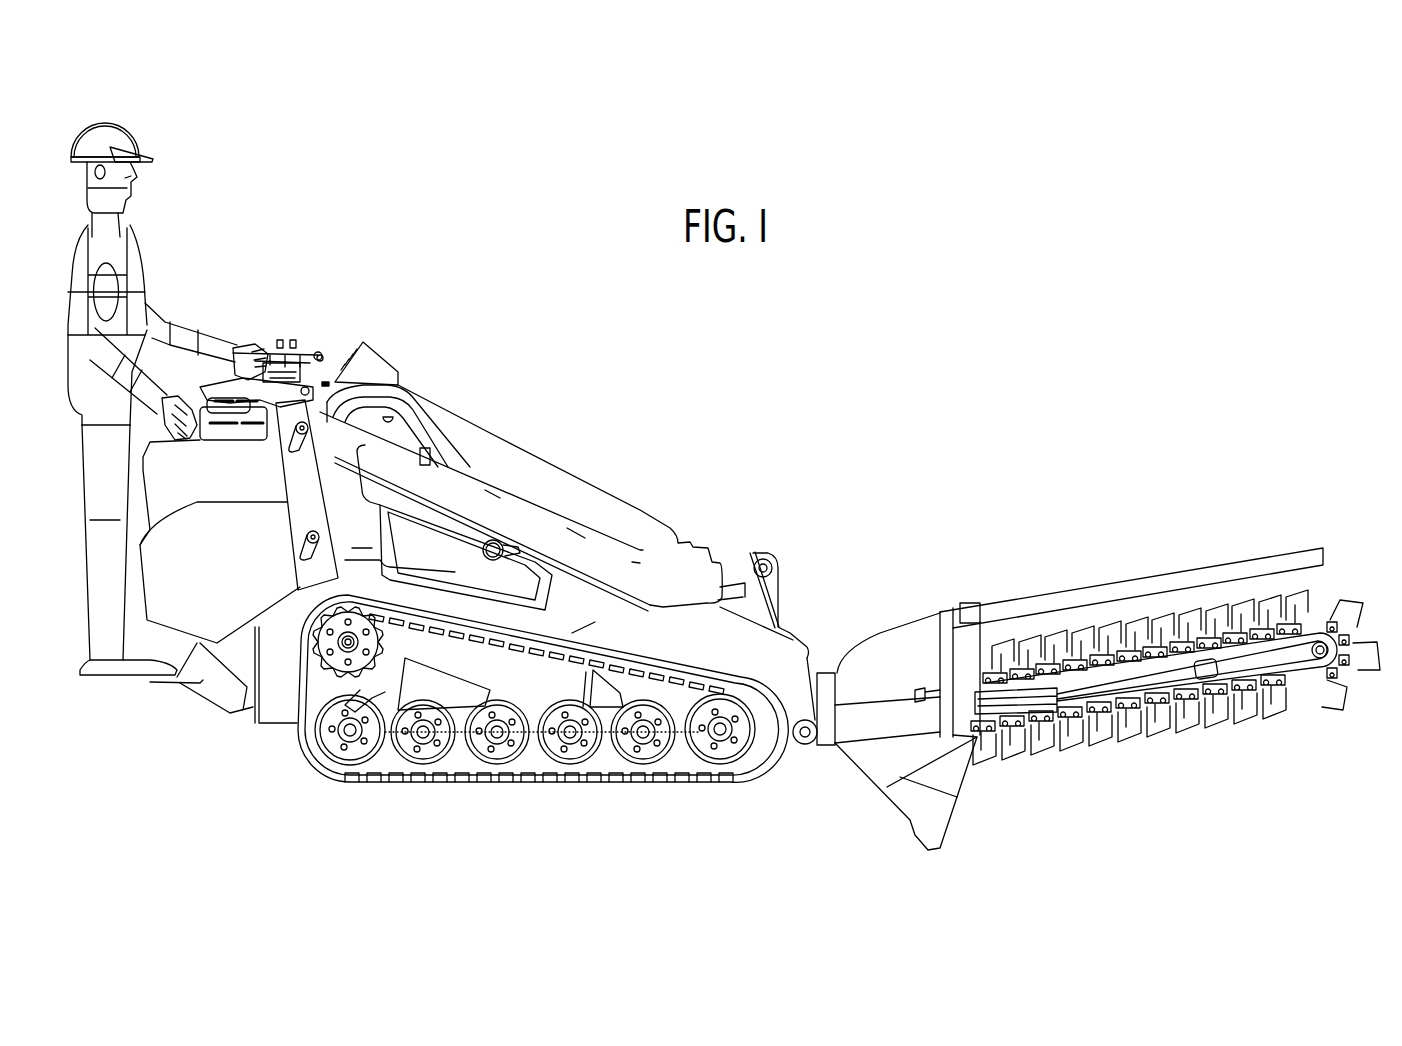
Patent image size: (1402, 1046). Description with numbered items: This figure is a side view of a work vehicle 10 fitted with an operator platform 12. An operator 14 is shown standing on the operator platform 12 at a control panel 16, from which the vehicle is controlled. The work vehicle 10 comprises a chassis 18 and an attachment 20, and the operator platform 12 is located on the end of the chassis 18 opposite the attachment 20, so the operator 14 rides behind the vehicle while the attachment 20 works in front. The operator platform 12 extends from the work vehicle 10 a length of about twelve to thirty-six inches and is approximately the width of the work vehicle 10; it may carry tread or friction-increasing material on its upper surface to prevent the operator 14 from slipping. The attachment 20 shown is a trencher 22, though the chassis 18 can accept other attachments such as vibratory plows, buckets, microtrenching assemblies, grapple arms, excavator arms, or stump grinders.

The work vehicle 10 is at (837, 387).
The operator platform 12 is at (128, 679).
The operator 14 is at (108, 122).
The control panel 16 is at (280, 340).
The chassis 18 is at (312, 453).
The attachment 20 is at (912, 642).
The trencher 22 is at (1153, 677).